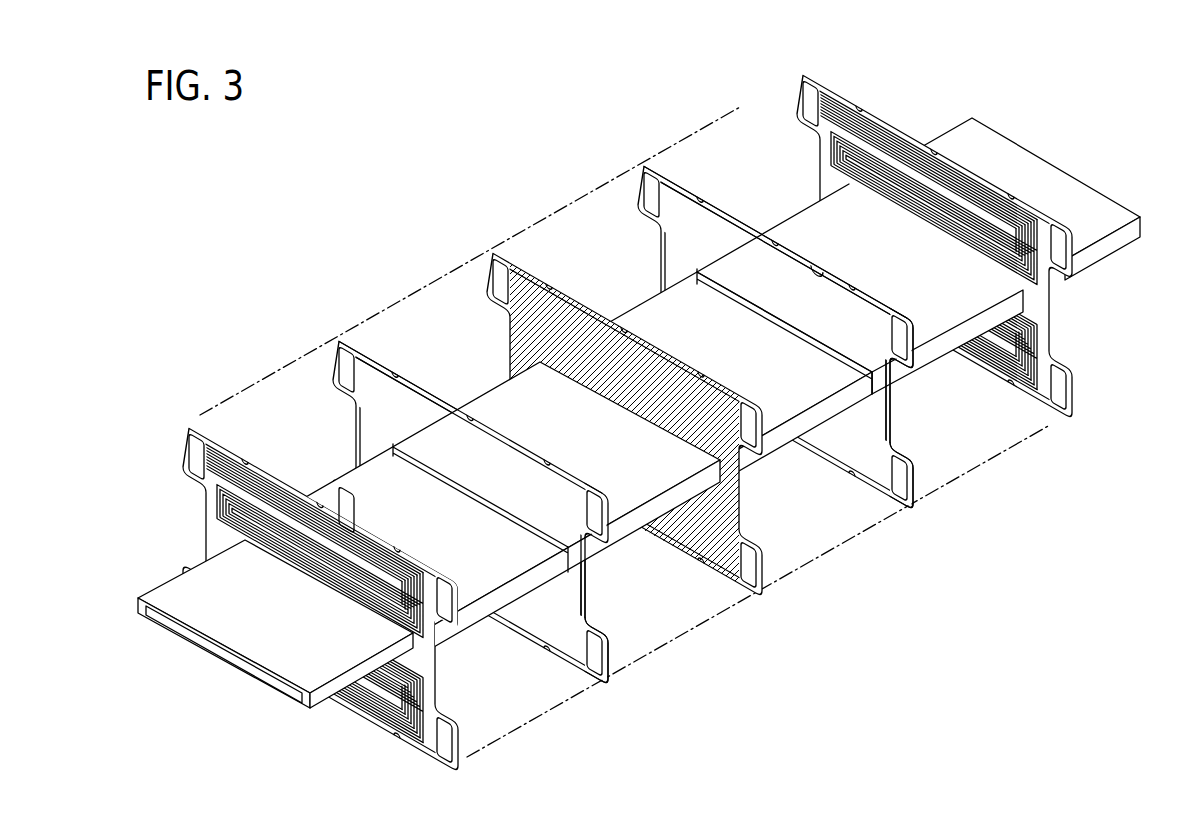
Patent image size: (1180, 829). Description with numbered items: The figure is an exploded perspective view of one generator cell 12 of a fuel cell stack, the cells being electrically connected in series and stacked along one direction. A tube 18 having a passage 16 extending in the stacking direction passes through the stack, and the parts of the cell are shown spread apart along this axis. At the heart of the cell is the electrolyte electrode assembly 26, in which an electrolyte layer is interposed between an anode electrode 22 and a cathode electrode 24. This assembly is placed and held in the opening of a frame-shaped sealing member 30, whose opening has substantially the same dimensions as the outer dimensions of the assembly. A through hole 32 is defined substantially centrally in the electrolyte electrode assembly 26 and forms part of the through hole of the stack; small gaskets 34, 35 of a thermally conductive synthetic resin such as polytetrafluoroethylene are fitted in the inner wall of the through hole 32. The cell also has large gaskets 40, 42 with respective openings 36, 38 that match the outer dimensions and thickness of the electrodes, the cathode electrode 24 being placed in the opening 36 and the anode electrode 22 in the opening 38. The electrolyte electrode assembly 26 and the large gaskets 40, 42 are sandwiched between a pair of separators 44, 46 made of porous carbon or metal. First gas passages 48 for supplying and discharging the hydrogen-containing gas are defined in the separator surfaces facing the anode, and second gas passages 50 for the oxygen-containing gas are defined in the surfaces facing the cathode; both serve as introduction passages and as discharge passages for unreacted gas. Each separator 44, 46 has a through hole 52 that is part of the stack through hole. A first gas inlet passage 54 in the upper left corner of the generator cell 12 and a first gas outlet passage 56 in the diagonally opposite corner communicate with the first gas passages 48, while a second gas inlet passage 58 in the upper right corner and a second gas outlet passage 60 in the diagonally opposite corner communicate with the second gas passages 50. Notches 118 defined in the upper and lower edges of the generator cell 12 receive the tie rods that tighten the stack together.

The generator cell 12 is at (110, 202).
The passage 16 is at (274, 627).
The tube 18 is at (1061, 173).
The anode electrode 22 is at (667, 343).
The cathode electrode 24 is at (512, 323).
The electrolyte electrode assembly 26 is at (698, 515).
The frame-shaped sealing member 30 is at (560, 292).
The through hole 32 is at (686, 440).
The small gasket 34 is at (500, 512).
The small gasket 35 is at (803, 337).
The opening 36 is at (578, 478).
The opening 38 is at (825, 269).
The large gasket 40 is at (505, 431).
The large gasket 42 is at (740, 222).
The separator 44 is at (412, 546).
The separator 46 is at (833, 90).
The first gas passages 48 is at (586, 412).
The second gas passages 50 is at (283, 480).
The through hole 52 is at (328, 580).
The first gas inlet passage 54 is at (197, 450).
The first gas outlet passage 56 is at (443, 745).
The second gas inlet passage 58 is at (440, 578).
The second gas outlet passage 60 is at (190, 650).
The notch 118 is at (395, 733).